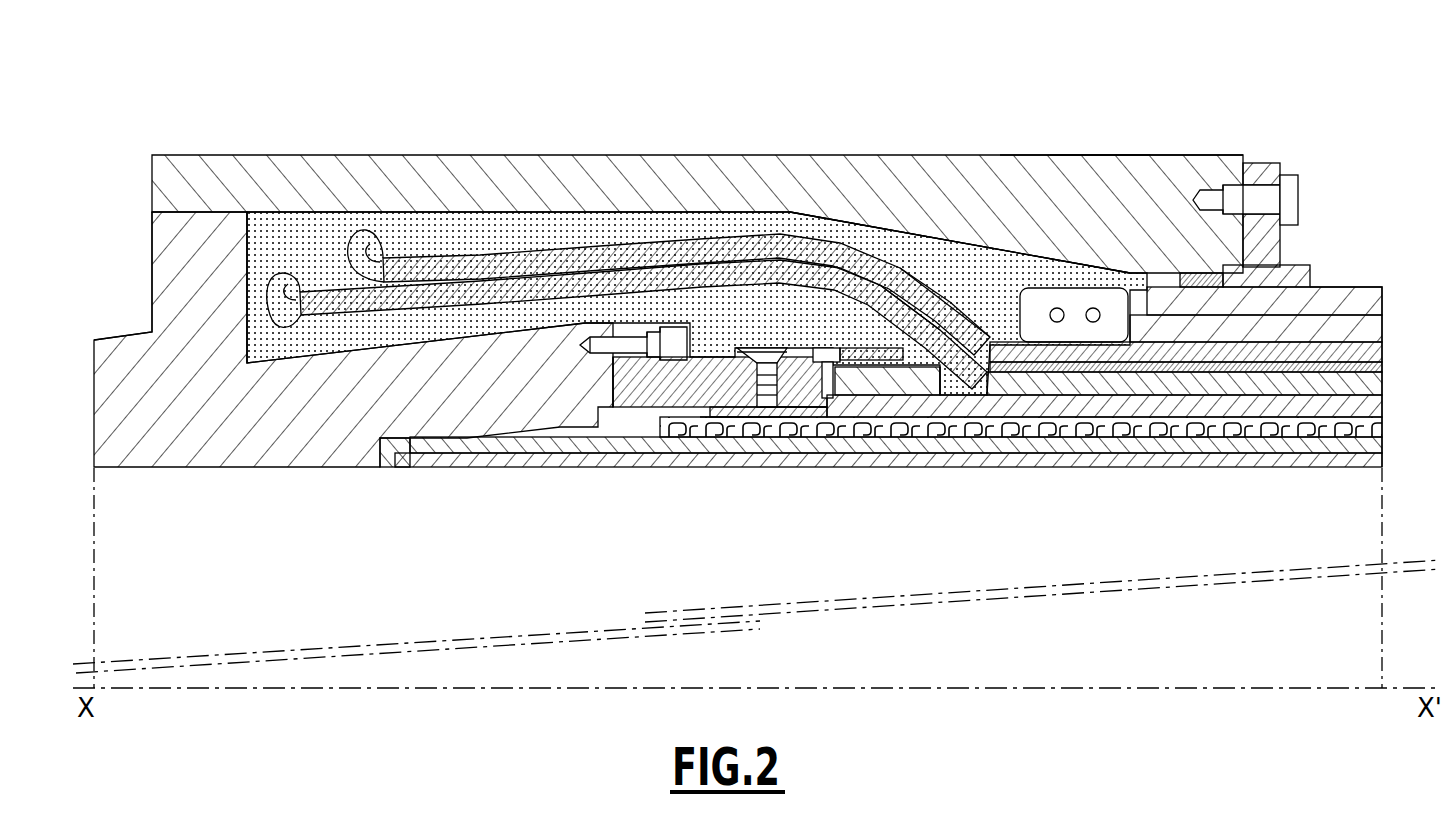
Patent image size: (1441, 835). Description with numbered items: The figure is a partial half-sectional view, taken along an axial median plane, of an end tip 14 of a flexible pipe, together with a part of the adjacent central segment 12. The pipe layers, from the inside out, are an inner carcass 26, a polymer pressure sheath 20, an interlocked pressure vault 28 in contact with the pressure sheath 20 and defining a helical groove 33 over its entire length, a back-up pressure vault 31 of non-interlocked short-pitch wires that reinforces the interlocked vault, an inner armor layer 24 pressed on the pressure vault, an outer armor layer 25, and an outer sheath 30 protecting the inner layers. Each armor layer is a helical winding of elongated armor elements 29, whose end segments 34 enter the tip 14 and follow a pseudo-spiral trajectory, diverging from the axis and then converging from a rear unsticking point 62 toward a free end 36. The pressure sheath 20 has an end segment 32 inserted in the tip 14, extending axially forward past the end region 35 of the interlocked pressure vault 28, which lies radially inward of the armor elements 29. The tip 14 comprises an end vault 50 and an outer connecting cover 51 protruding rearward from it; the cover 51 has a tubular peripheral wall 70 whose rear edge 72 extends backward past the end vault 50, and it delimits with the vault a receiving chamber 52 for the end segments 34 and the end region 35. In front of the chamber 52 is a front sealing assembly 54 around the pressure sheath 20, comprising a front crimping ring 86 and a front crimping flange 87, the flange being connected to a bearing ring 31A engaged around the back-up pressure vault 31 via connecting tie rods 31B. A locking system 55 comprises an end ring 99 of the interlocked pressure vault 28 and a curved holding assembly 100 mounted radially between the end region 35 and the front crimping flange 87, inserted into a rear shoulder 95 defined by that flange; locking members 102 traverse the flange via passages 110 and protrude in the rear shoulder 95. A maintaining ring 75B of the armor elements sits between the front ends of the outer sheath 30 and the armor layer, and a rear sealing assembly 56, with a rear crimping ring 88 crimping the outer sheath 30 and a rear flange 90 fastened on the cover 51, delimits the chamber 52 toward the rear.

The central segment 12 is at (1385, 208).
The end tip 14 is at (1103, 125).
The pressure sheath 20 is at (1383, 445).
The inner armor layer 24 is at (1383, 353).
The outer armor layer 25 is at (1383, 331).
The inner carcass 26 is at (1383, 462).
The interlocked pressure vault 28 is at (1383, 410).
The armor element 29 is at (583, 268).
The outer sheath 30 is at (1382, 306).
The back-up pressure vault 31 is at (1383, 386).
The bearing ring 31A is at (905, 380).
The connecting tie rods 31B is at (800, 345).
The end segment of the pressure sheath 32 is at (828, 400).
The helical groove 33 is at (1000, 430).
The end segment of the armor element 34 is at (903, 315).
The end region of the interlocked pressure vault 35 is at (875, 362).
The free end 36 is at (305, 285).
The end vault 50 is at (175, 237).
The outer connecting cover 51 is at (1072, 155).
The receiving chamber 52 is at (925, 268).
The front sealing assembly 54 is at (445, 480).
The locking system 55 is at (788, 420).
The rear sealing assembly 56 is at (1315, 158).
The rear unsticking point 62 is at (940, 400).
The tubular peripheral wall 70 is at (846, 200).
The rear edge 72 is at (1248, 163).
The maintaining ring 75B is at (1103, 303).
The front crimping ring 86 is at (507, 455).
The front crimping flange 87 is at (600, 467).
The rear crimping ring 88 is at (1263, 282).
The rear flange 90 is at (1262, 240).
The rear shoulder 95 is at (720, 385).
The end ring 99 is at (655, 410).
The curved holding assembly 100 is at (740, 410).
The locking members 102 is at (760, 410).
The passages 110 is at (765, 340).